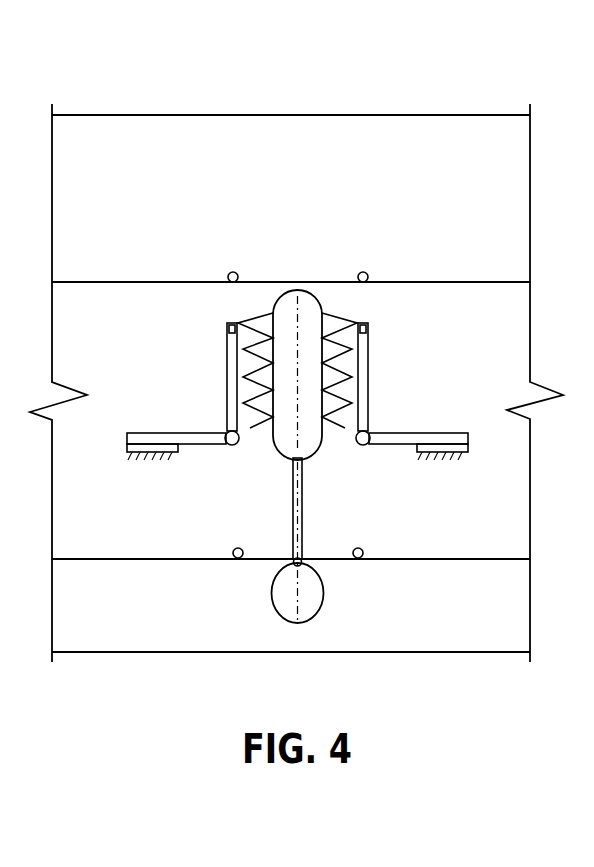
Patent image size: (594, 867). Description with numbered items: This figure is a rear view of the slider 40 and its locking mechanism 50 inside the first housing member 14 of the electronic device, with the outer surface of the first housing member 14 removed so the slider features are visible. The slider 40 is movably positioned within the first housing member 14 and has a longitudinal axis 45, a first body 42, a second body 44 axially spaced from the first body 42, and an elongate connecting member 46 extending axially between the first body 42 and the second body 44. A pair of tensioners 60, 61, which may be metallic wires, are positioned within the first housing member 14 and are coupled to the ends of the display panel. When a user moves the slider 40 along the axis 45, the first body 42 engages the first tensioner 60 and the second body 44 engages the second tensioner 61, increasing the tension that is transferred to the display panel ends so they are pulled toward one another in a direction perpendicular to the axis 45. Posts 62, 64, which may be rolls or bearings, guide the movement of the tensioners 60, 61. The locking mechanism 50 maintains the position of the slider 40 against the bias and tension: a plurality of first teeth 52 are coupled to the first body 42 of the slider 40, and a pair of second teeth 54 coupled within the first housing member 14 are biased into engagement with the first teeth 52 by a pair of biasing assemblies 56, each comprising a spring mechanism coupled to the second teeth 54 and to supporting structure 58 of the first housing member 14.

The first housing member 14 is at (181, 114).
The slider 40 is at (304, 521).
The first body 42 is at (312, 452).
The second body 44 is at (323, 590).
The longitudinal axis 45 is at (297, 566).
The elongate connecting member 46 is at (293, 512).
The locking mechanism 50 is at (242, 320).
The first teeth 52 is at (325, 316).
The second teeth 54 is at (227, 331).
The biasing assemblies 56 is at (214, 416).
The supporting structure 58 is at (127, 448).
The first tensioner 60 is at (115, 280).
The second tensioner 61 is at (132, 561).
The post 62 is at (228, 276).
The post 64 is at (233, 553).